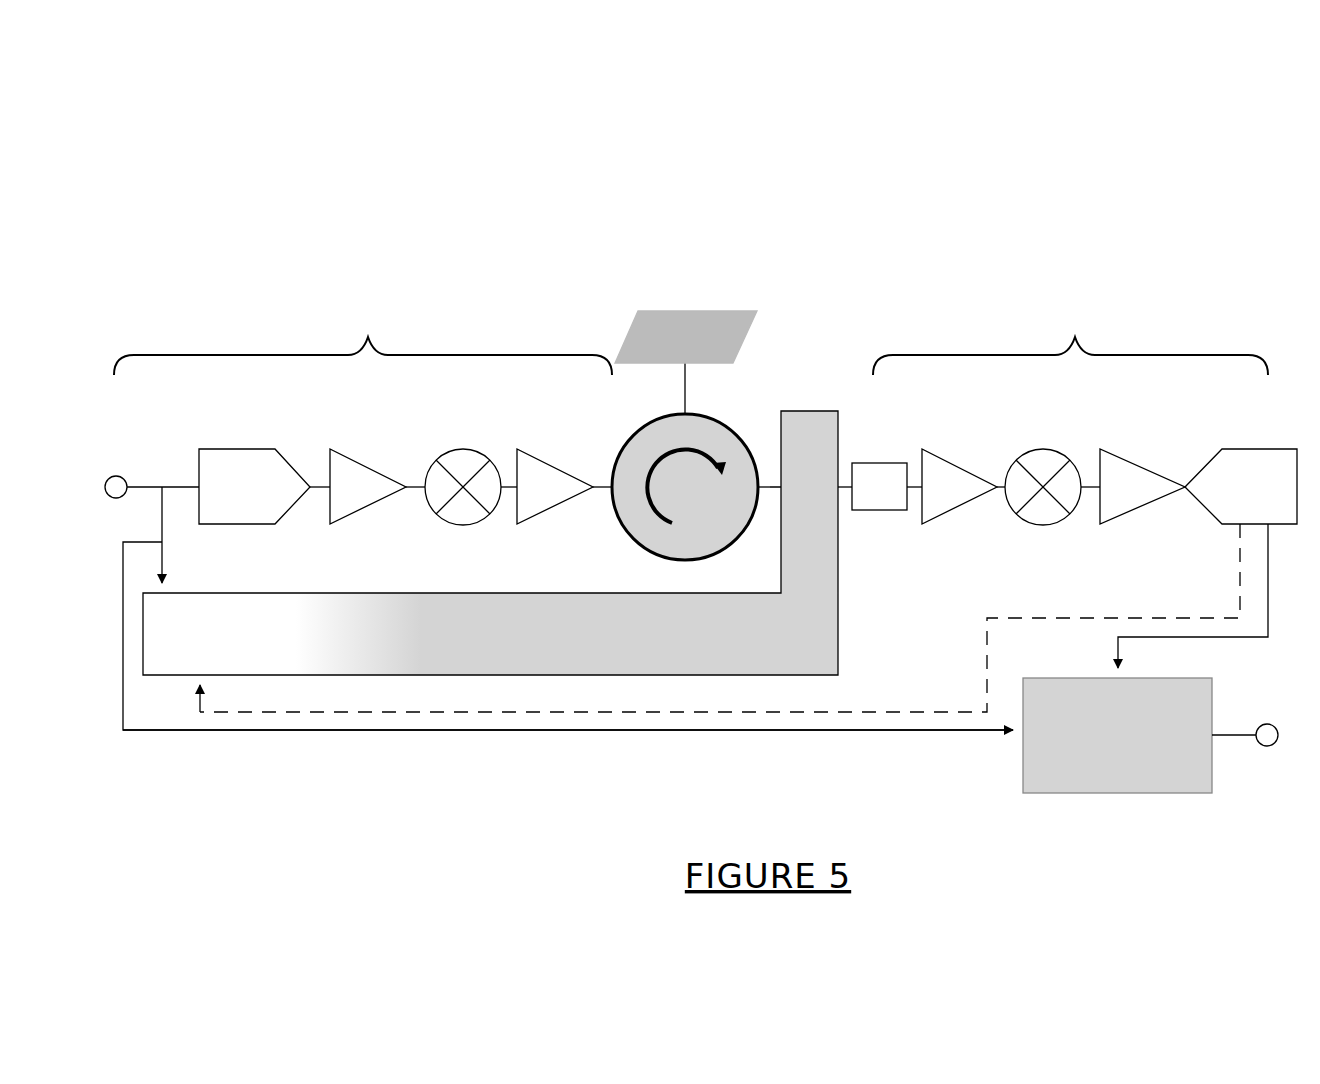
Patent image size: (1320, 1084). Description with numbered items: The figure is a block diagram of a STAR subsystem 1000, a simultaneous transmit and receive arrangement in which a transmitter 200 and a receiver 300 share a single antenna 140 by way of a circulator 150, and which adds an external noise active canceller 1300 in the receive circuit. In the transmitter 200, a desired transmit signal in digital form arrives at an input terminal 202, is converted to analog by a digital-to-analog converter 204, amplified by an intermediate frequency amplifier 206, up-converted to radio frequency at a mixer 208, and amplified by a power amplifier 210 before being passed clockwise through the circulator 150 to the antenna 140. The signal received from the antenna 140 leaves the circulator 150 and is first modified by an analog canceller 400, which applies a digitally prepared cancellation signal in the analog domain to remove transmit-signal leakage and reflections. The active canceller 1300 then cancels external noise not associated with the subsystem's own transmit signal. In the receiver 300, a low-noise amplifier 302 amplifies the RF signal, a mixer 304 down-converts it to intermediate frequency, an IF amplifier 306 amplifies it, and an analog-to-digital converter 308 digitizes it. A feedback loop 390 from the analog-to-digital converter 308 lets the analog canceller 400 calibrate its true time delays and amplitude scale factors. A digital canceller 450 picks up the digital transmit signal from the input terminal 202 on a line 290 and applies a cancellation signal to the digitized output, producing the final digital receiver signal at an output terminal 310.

The STAR subsystem 1000 is at (998, 194).
The transmitter 200 is at (363, 341).
The receiver 300 is at (1070, 341).
The input terminal 202 is at (120, 476).
The digital-to-analog converter 204 is at (228, 449).
The intermediate frequency amplifier 206 is at (343, 449).
The up-convert mixer 208 is at (440, 510).
The power amplifier 210 is at (535, 449).
The antenna 140 is at (757, 318).
The circulator 150 is at (722, 420).
The analog canceller 400 is at (490, 543).
The active canceller 1300 is at (885, 510).
The low-noise amplifier 302 is at (935, 453).
The mixer 304 is at (1070, 512).
The IF amplifier 306 is at (1112, 453).
The analog-to-digital converter 308 is at (1203, 461).
The feedback loop 390 is at (987, 675).
The line 290 is at (602, 735).
The digital canceller 450 is at (1117, 735).
The output terminal 310 is at (1267, 746).